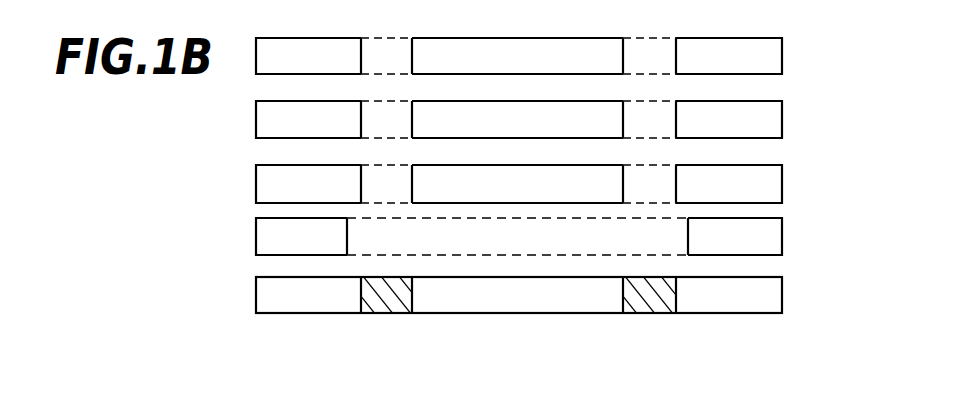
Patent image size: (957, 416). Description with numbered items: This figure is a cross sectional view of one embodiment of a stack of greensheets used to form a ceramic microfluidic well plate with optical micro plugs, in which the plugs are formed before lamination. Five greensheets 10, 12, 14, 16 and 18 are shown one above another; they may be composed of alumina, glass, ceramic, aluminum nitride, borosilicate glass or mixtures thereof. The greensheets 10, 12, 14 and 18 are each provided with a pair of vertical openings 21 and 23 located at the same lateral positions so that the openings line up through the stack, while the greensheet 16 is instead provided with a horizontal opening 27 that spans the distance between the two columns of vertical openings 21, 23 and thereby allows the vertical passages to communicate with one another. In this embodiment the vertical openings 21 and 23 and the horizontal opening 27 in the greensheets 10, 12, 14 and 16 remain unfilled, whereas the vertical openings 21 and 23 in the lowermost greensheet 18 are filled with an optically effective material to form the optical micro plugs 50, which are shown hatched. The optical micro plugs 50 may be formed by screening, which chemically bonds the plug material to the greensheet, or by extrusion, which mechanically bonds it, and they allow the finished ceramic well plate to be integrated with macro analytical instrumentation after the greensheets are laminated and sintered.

The greensheet 10 is at (770, 59).
The greensheet 12 is at (770, 122).
The greensheet 14 is at (770, 187).
The greensheet 16 is at (770, 240).
The greensheet 18 is at (770, 298).
The vertical opening 21 is at (386, 120).
The vertical opening 23 is at (649, 120).
The horizontal opening 27 is at (517, 236).
The optical micro plug 50 is at (387, 318).